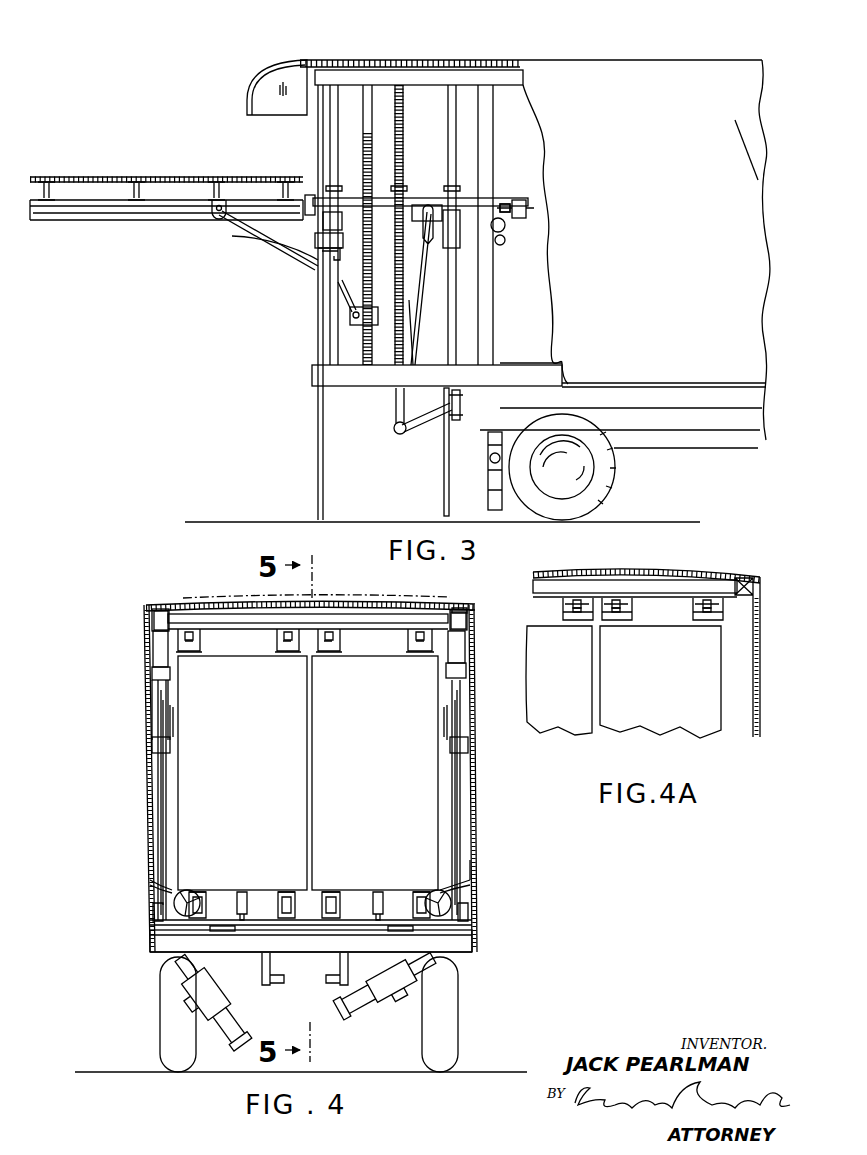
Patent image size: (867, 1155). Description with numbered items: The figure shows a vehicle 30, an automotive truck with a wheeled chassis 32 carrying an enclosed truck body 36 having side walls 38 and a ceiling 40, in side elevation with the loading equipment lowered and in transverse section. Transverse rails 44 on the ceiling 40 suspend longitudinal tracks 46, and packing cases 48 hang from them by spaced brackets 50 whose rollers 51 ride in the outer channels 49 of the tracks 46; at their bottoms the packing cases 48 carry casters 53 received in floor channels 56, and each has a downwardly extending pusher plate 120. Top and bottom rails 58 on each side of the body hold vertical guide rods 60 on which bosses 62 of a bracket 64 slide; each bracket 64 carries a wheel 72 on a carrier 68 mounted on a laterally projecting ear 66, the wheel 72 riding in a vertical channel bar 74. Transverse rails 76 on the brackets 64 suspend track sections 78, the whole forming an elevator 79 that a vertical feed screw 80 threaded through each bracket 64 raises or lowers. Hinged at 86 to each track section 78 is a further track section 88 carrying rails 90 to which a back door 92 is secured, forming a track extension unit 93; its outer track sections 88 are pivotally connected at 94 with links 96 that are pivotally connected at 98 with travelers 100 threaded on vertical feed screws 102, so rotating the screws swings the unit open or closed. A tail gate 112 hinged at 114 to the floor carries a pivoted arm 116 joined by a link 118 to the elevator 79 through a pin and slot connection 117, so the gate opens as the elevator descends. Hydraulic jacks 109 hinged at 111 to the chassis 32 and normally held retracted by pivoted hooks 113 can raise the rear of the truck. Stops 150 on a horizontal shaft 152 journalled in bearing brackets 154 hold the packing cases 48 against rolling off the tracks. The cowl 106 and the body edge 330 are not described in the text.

In FIG. 3, the vehicle 30 is at (735, 452).
In FIG. 4, the vehicle 30 is at (481, 697).
In FIG. 3, the wheeled chassis 32 is at (667, 442).
In FIG. 4, the wheeled chassis 32 is at (146, 953).
In FIG. 3, the truck body 36 is at (752, 160).
In FIG. 4, the truck body 36 is at (482, 870).
In FIG. 3, the side walls 38 is at (640, 57).
In FIG. 4, the side walls 38 is at (148, 797).
In FIG. 4A, the side walls 38 is at (762, 672).
In FIG. 3, the top or ceiling 40 is at (410, 62).
In FIG. 4, the top or ceiling 40 is at (320, 600).
In FIG. 4A, the top or ceiling 40 is at (705, 572).
In FIG. 4A, the transverse rails 44 is at (645, 588).
In FIG. 4A, the tracks 46 is at (708, 606).
In FIG. 4, the packing cases 48 is at (190, 758).
In FIG. 4A, the packing cases 48 is at (622, 725).
In FIG. 4A, the outer channels 49 is at (576, 600).
In FIG. 4, the brackets 50 is at (183, 647).
In FIG. 4A, the brackets 50 is at (722, 618).
In FIG. 4, the rollers 51 is at (335, 633).
In FIG. 4A, the rollers 51 is at (590, 598).
In FIG. 4, the casters 53 is at (206, 900).
In FIG. 4, the parallel channels 56 is at (222, 911).
In FIG. 3, the top and bottom rails 58 is at (428, 86).
In FIG. 4, the top and bottom rails 58 is at (158, 608).
In FIG. 3, the vertical guide rods 60 is at (330, 125).
In FIG. 4, the vertical guide rods 60 is at (157, 812).
In FIG. 3, the bosses 62 is at (345, 240).
In FIG. 4, the bosses 62 is at (158, 650).
In FIG. 3, the bracket 64 is at (412, 198).
In FIG. 4, the bracket 64 is at (155, 625).
In FIG. 3, the laterally projecting ear 66 is at (524, 200).
In FIG. 3, the carrier 68 is at (505, 200).
In FIG. 3, the wheel 72 is at (505, 232).
In FIG. 3, the vertical channel bar 74 is at (494, 300).
In FIG. 3, the transverse rails 76 is at (340, 186).
In FIG. 4, the transverse rails 76 is at (235, 615).
In FIG. 3, the track sections 78 is at (322, 235).
In FIG. 4, the track sections 78 is at (212, 640).
In FIG. 3, the elevator 79 is at (311, 192).
In FIG. 4, the elevator 79 is at (462, 608).
In FIG. 3, the vertical feed screw 80 is at (373, 160).
In FIG. 4, the vertical feed screw 80 is at (150, 850).
In FIG. 3, the hinge 86 is at (268, 236).
In FIG. 3, the track section 88 is at (160, 212).
In FIG. 3, the rails 90 is at (55, 193).
In FIG. 3, the back door 92 is at (90, 177).
In FIG. 3, the track extension unit 93 is at (120, 222).
In FIG. 3, the pivotal connection 94 is at (215, 212).
In FIG. 3, the links 96 is at (300, 244).
In FIG. 4, the links 96 is at (170, 720).
In FIG. 3, the pivotal connection 98 is at (352, 316).
In FIG. 3, the travelers 100 is at (366, 325).
In FIG. 3, the vertical feed screws 102 is at (343, 258).
In FIG. 4, the vertical feed screws 102 is at (150, 872).
In FIG. 3, the cowl 106 is at (260, 75).
In FIG. 4, the jacks 109 is at (225, 1005).
In FIG. 4, the hinge 111 is at (200, 960).
In FIG. 3, the tail gate 112 is at (444, 488).
In FIG. 4, the tail gate 112 is at (472, 945).
In FIG. 4, the pivoted hooks 113 is at (345, 983).
In FIG. 3, the hinge 114 is at (456, 405).
In FIG. 4, the hinge 114 is at (238, 943).
In FIG. 3, the pivoted arm 116 is at (425, 415).
In FIG. 3, the pin and slot connection 117 is at (433, 245).
In FIG. 3, the link 118 is at (414, 352).
In FIG. 4, the pusher plate 120 is at (246, 893).
In FIG. 4, the stops 150 is at (172, 895).
In FIG. 4, the horizontal shaft 152 is at (188, 897).
In FIG. 4, the bearing brackets 154 is at (158, 925).
In FIG. 3, the body edge 330 is at (318, 418).
In FIG. 4, the body edge 330 is at (158, 758).